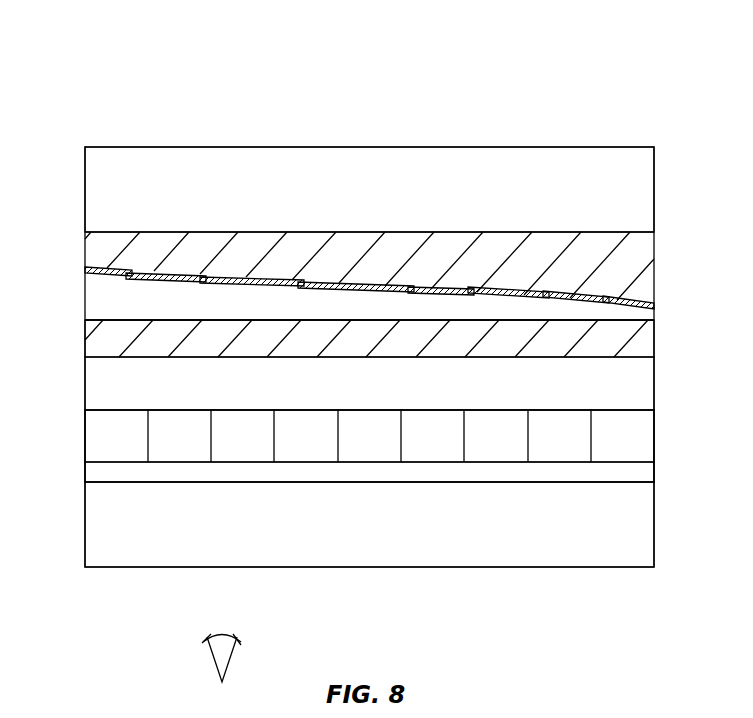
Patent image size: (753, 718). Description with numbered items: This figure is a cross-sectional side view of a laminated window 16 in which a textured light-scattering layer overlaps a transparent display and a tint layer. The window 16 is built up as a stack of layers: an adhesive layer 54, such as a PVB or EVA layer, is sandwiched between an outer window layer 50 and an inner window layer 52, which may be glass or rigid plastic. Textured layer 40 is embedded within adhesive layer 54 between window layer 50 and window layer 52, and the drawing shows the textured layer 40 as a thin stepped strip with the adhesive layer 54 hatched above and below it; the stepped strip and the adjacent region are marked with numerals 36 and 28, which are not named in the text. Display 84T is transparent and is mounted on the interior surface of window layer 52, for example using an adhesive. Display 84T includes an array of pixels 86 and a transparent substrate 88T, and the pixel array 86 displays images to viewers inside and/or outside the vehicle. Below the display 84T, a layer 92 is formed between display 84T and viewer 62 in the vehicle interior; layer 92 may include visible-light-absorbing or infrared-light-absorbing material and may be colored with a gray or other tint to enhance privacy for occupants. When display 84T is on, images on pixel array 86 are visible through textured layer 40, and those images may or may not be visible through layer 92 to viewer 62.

The window 16 is at (622, 63).
The window layer 50 is at (645, 190).
The adhesive layer 54 is at (645, 255).
The electrode layer 36 is at (108, 268).
The textured layer 40 is at (80, 272).
The liquid crystal material 28 is at (130, 307).
The window layer 52 is at (95, 375).
The array of pixels 86 is at (161, 427).
The transparent substrate 88T is at (97, 468).
The display 84T is at (662, 410).
The layer 92 is at (97, 522).
The viewer 62 is at (208, 656).